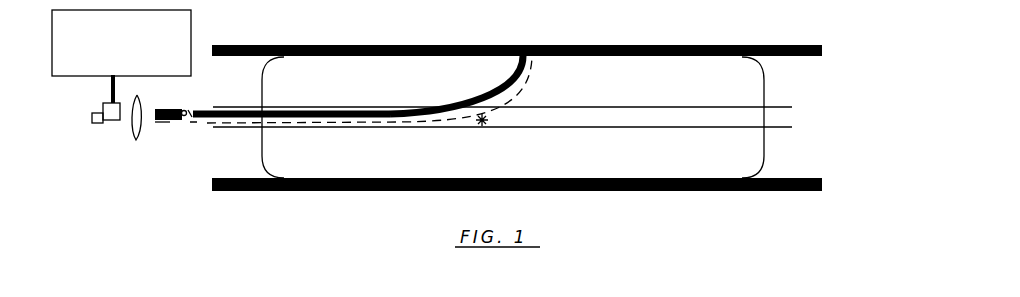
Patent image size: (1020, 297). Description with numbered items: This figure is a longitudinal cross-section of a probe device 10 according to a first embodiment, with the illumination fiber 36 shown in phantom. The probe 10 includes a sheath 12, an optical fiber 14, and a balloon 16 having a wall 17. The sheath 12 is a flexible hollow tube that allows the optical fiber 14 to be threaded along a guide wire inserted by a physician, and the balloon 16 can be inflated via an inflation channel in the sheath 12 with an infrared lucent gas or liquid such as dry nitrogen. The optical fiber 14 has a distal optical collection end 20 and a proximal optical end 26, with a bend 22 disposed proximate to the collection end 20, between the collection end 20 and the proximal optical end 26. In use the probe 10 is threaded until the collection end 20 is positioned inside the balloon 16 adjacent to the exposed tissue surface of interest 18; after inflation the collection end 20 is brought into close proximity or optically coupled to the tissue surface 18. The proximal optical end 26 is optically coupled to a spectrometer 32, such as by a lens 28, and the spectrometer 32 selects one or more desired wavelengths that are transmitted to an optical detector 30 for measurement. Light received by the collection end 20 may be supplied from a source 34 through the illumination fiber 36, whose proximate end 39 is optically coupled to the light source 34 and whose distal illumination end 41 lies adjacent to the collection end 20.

The probe device 10 is at (852, 99).
The sheath 12 is at (611, 128).
The optical fiber 14 is at (348, 108).
The balloon 16 is at (766, 157).
The wall 17 is at (766, 73).
The tissue surface of interest 18 is at (808, 177).
The distal optical collection end 20 is at (515, 60).
The bend 22 is at (492, 96).
The proximal optical end 26 is at (176, 110).
The lens 28 is at (132, 138).
The optical detector 30 is at (112, 122).
The spectrometer 32 is at (82, 76).
The light source 34 is at (92, 118).
The illumination fiber 36 is at (485, 125).
The proximate end 39 is at (153, 123).
The distal illumination end 41 is at (533, 59).